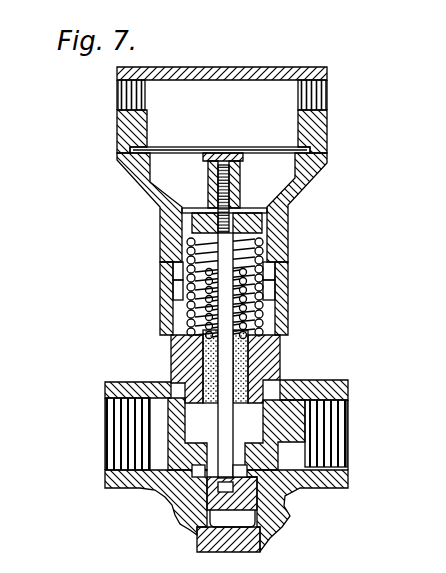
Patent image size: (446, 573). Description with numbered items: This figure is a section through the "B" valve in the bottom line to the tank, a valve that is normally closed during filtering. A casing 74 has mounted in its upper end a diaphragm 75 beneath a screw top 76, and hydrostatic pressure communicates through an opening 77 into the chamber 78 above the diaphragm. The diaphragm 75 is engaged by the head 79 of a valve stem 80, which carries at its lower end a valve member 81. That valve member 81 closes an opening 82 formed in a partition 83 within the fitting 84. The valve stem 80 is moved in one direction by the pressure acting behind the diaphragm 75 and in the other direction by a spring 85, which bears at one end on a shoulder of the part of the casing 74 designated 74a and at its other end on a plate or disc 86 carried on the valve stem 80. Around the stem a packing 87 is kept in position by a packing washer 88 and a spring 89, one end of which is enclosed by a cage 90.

The casing 74 is at (120, 137).
The shoulder portion of casing 74a is at (270, 355).
The diaphragm 75 is at (280, 118).
The screw top 76 is at (320, 106).
The opening 77 is at (120, 98).
The chamber 78 is at (237, 100).
The head of valve stem 79 is at (305, 190).
The valve stem 80 is at (261, 252).
The valve member 81 is at (264, 518).
The opening 82 is at (240, 437).
The partition 83 is at (347, 415).
The fitting 84 is at (349, 479).
The spring 85 is at (250, 300).
The plate or disc 86 is at (290, 225).
The packing 87 is at (197, 367).
The packing washer 88 is at (162, 322).
The spring 89 is at (187, 280).
The cage 90 is at (186, 268).